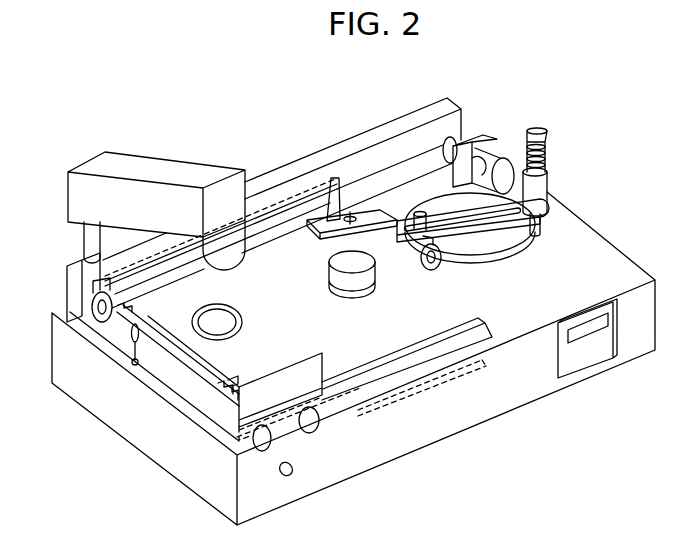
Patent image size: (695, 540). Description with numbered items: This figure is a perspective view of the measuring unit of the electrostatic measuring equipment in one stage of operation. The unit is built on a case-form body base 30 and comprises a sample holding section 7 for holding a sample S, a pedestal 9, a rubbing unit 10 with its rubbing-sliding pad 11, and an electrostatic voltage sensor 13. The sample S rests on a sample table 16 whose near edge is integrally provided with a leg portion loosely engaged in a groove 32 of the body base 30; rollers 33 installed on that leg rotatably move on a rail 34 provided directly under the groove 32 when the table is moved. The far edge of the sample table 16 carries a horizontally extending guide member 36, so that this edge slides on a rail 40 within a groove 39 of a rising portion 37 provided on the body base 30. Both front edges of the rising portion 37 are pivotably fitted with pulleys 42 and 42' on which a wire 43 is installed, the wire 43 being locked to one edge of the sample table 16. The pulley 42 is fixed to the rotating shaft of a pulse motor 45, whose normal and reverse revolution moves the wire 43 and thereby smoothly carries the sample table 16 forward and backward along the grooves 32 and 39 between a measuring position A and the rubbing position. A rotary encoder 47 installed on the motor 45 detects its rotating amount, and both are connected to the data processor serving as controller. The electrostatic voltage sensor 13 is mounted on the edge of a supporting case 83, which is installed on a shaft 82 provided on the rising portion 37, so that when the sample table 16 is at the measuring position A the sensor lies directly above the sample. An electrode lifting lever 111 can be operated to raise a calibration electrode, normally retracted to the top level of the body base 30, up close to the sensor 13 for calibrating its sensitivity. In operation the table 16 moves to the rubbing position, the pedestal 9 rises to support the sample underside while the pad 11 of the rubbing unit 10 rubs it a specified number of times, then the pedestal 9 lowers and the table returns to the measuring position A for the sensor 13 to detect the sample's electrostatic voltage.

The body base 30 is at (626, 259).
The sample table 16 is at (100, 330).
The groove 32 is at (470, 330).
The rail 34 is at (450, 378).
The sample holding section 7 is at (222, 370).
The sample S is at (183, 367).
The measuring position A is at (186, 394).
The electrode lifting lever 111 is at (148, 328).
The rollers 33 is at (315, 438).
The pedestal 9 is at (368, 284).
The supporting case 83 is at (118, 162).
The shaft 82 is at (84, 235).
The electrostatic voltage sensor 13 is at (213, 237).
The rising portion 37 is at (421, 115).
The wire 43 is at (395, 173).
The rail 40 is at (263, 207).
The groove 39 is at (292, 207).
The rubbing-sliding pad 11 is at (333, 212).
The guide member 36 is at (92, 283).
The pulley 42' is at (58, 308).
The rubbing unit 10 is at (531, 253).
The pulse motor 45 is at (513, 153).
The pulley 42 is at (485, 128).
The rotary encoder 47 is at (497, 172).